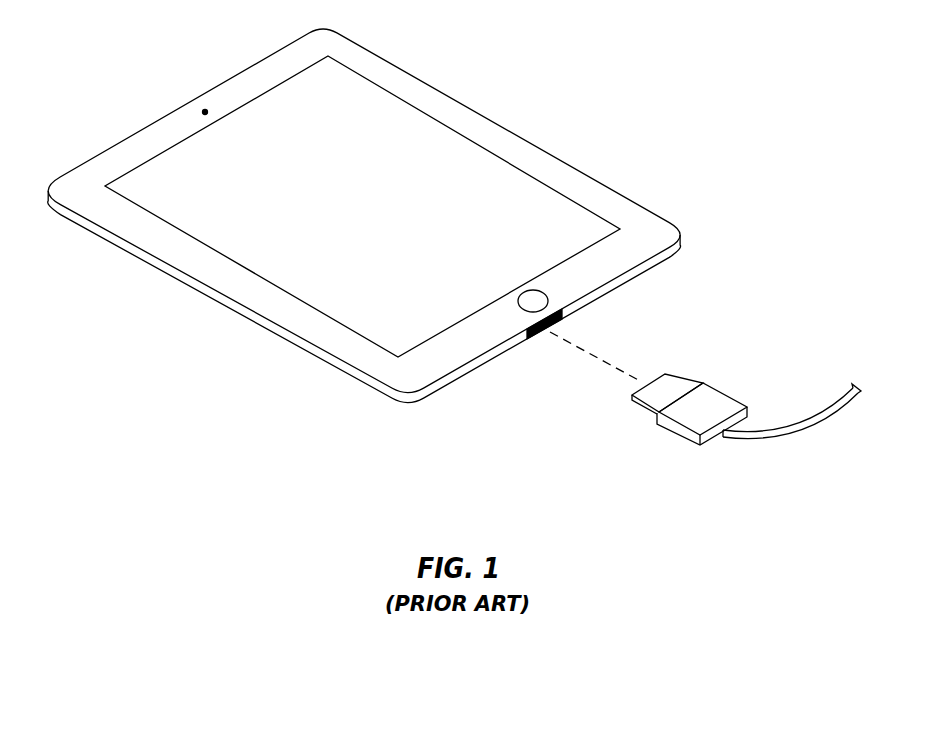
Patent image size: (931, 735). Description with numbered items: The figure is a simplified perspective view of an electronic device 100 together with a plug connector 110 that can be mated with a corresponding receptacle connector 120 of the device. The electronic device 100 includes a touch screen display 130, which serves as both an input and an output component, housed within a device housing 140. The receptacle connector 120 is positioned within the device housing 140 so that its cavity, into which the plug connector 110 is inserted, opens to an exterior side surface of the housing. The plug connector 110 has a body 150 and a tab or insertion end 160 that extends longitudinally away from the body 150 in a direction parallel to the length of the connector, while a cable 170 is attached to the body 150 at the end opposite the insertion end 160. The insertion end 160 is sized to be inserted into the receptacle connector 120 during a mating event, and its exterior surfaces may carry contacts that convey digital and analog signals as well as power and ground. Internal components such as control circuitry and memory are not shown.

The electronic device 100 is at (497, 52).
The plug connector 110 is at (746, 444).
The receptacle connector 120 is at (542, 356).
The touch screen display 130 is at (308, 267).
The device housing 140 is at (592, 176).
The body 150 is at (725, 407).
The insertion end 160 is at (672, 388).
The cable 170 is at (780, 437).